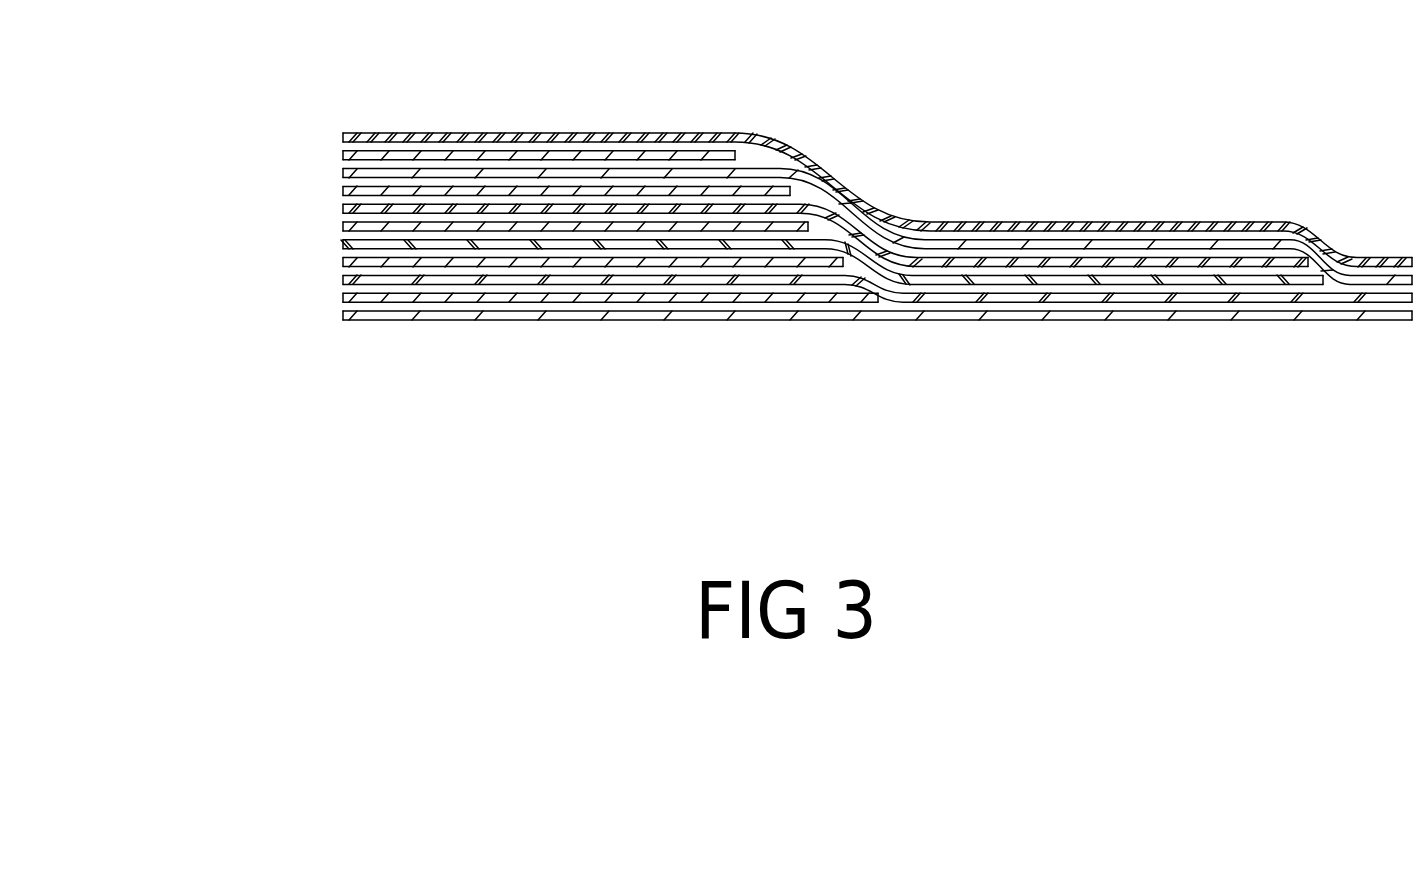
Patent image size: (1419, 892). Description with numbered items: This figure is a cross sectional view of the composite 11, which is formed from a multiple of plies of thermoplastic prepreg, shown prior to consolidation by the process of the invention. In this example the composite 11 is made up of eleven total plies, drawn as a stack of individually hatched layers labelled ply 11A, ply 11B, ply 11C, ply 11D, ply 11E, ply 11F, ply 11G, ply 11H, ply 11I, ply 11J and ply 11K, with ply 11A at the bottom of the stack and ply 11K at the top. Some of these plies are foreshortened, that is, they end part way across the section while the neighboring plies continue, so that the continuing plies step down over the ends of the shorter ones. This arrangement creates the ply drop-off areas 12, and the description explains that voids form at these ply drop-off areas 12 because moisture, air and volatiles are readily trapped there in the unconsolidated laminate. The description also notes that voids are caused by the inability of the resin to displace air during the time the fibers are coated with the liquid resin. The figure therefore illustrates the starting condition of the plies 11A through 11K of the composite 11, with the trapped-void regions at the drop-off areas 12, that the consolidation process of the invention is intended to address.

The composite 11 is at (580, 118).
The ply drop-off areas 12 is at (745, 158).
The ply of prepreg 11A is at (343, 316).
The ply of prepreg 11B is at (343, 298).
The ply of prepreg 11C is at (343, 280).
The ply of prepreg 11D is at (343, 262).
The ply of prepreg 11E is at (343, 244).
The ply of prepreg 11F is at (343, 226).
The ply of prepreg 11G is at (343, 207).
The ply of prepreg 11H is at (343, 189).
The ply of prepreg 11I is at (343, 170).
The ply of prepreg 11J is at (343, 152).
The ply of prepreg 11K is at (362, 131).